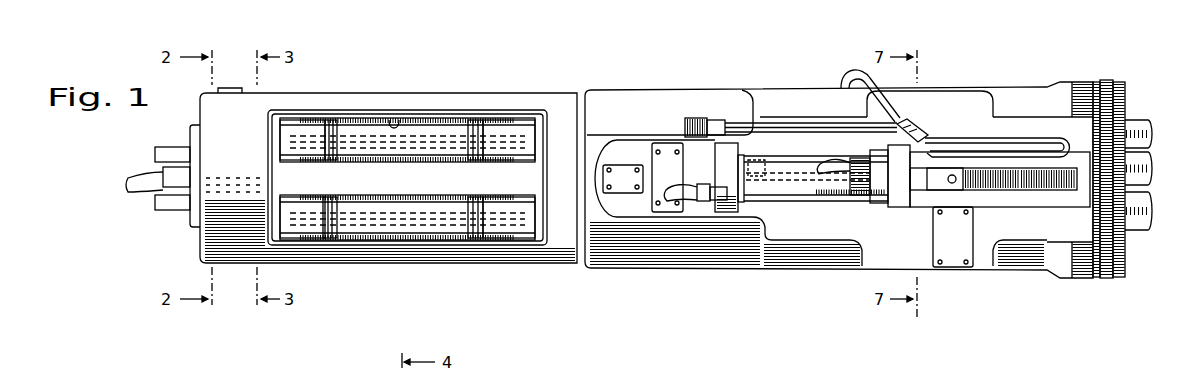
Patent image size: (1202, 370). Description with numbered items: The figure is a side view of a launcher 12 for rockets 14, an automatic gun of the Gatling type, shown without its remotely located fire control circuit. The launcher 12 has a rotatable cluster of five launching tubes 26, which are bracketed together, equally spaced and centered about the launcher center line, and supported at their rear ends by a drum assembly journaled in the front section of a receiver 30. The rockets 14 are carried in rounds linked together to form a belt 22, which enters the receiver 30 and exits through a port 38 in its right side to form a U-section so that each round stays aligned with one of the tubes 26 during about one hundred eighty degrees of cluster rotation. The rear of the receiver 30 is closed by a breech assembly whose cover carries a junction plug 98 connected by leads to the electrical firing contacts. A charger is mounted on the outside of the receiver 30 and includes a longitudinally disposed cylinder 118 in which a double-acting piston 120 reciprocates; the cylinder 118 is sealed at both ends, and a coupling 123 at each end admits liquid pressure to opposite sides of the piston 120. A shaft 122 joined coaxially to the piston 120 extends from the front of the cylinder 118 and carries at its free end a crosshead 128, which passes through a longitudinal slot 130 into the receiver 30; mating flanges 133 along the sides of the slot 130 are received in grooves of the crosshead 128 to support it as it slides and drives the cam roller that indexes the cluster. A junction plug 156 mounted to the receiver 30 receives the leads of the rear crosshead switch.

The launcher 12 is at (682, 86).
The rockets 14 is at (834, 206).
The belt 22 is at (460, 113).
The launching tubes 26 is at (1143, 158).
The receiver 30 is at (645, 256).
The port 38 is at (393, 120).
The junction plug 98 is at (177, 181).
The cylinder 118 is at (762, 217).
The piston 120 is at (756, 160).
The shaft 122 is at (796, 163).
The coupling 123 is at (728, 204).
The crosshead 128 is at (943, 186).
The longitudinal slot 130 is at (1075, 185).
The mating flanges 133 is at (1040, 185).
The junction plug 156 is at (684, 118).